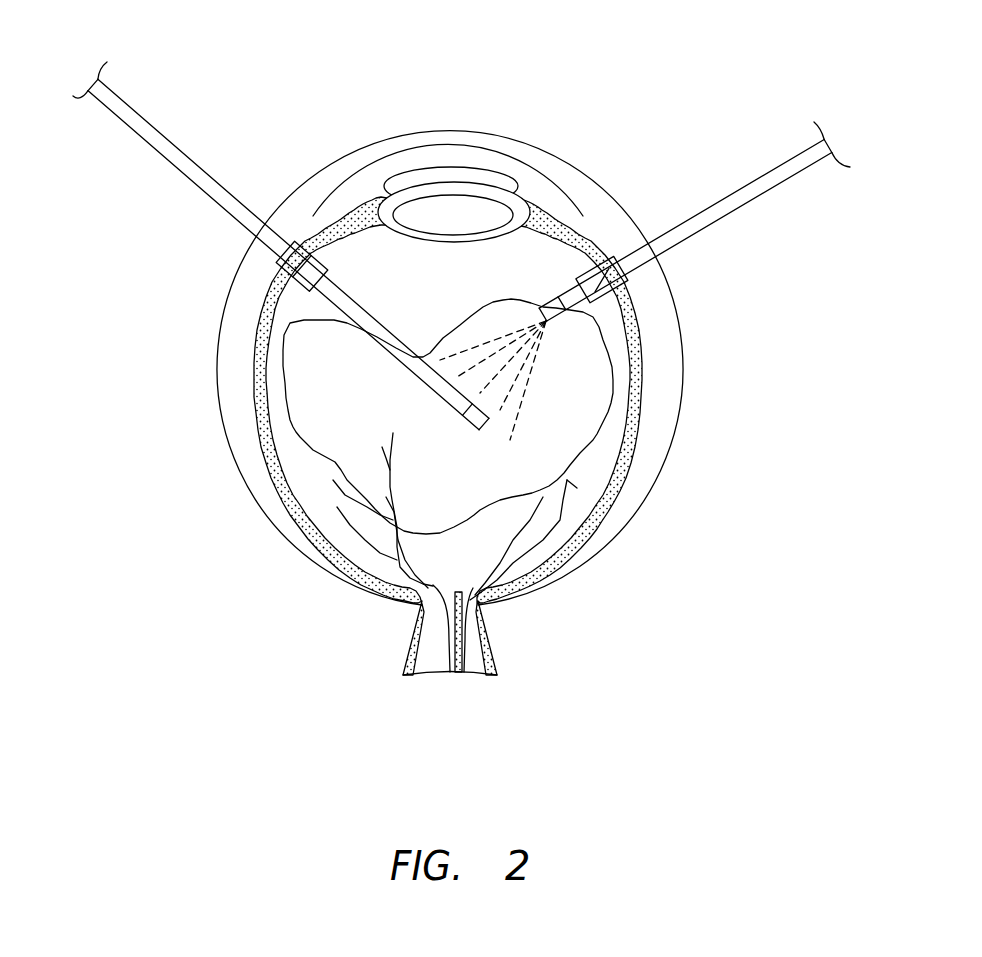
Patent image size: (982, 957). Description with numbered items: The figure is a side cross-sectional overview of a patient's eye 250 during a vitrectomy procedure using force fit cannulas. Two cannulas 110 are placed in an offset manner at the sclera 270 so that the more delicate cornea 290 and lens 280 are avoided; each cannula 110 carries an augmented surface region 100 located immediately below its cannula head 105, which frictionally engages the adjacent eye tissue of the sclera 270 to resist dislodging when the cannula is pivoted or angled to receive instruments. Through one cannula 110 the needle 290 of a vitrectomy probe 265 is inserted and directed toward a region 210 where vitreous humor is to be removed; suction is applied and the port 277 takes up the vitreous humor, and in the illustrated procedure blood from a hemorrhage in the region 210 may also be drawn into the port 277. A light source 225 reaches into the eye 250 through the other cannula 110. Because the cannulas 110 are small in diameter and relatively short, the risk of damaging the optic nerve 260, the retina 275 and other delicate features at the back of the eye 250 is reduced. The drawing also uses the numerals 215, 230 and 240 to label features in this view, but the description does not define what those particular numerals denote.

The augmented surface region 100 is at (293, 270).
The cannula head 105 is at (294, 240).
The cannula 110 is at (300, 300).
The region where vitreous humor is to be removed 210 is at (598, 416).
The trocar cannula 215 is at (628, 280).
The light source 225 is at (795, 141).
The trocar cannula 230 is at (278, 258).
The fluid stream 240 is at (536, 380).
The patient's eye 250 is at (218, 241).
The optic nerve 260 is at (463, 655).
The vitrectomy probe 265 is at (142, 96).
The sclera 270 is at (667, 338).
The retina 275 is at (328, 498).
The port 277 is at (478, 427).
The lens 280 is at (480, 215).
The needle 290 is at (193, 160).